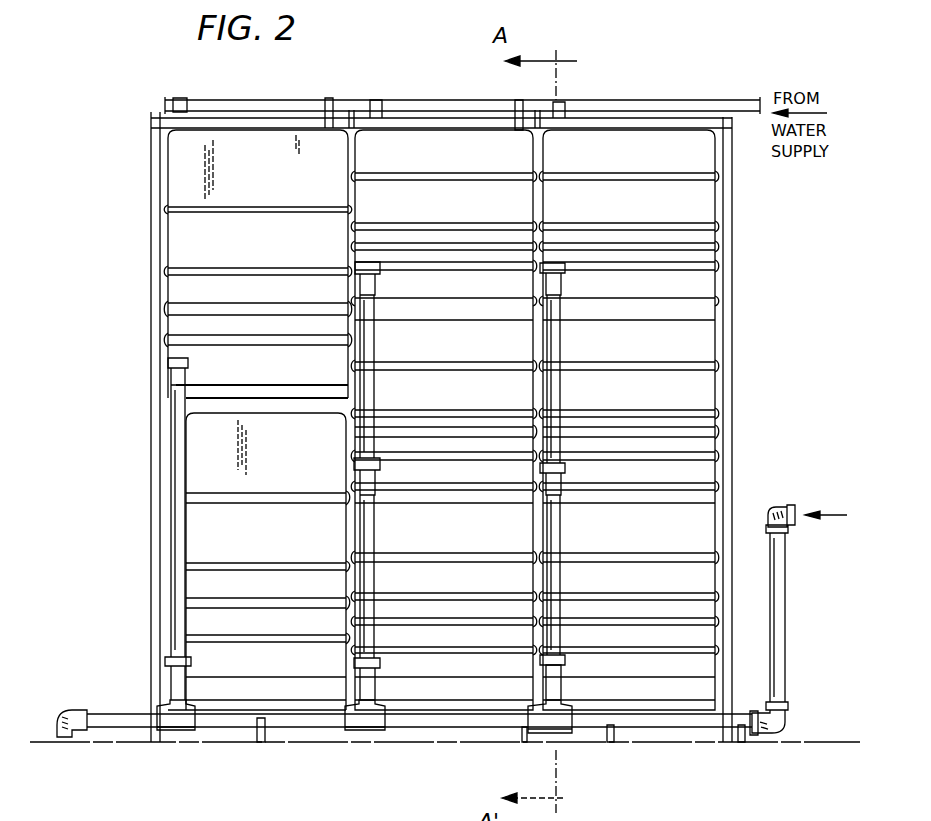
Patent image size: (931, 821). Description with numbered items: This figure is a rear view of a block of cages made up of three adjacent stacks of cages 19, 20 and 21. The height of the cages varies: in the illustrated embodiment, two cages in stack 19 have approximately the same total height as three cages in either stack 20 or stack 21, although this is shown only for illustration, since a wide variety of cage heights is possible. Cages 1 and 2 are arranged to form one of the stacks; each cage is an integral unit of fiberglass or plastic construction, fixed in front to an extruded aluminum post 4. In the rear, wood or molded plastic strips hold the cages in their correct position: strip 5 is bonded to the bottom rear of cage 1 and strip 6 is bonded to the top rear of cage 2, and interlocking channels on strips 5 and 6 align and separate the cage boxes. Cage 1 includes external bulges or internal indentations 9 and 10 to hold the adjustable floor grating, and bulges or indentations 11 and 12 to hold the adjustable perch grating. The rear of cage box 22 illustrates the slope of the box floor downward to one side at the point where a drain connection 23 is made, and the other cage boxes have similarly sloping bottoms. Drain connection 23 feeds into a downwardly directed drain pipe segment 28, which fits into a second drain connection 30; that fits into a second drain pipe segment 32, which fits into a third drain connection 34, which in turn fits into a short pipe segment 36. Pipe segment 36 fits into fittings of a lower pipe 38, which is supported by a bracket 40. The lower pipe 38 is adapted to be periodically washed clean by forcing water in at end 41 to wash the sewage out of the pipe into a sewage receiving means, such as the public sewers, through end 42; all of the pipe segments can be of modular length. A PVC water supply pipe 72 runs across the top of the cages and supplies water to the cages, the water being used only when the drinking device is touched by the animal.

The cage 1 is at (170, 186).
The cage 2 is at (165, 452).
The extruded aluminum post 4 is at (151, 170).
The strip 5 is at (245, 385).
The strip 6 is at (248, 400).
The bulge 9 is at (168, 304).
The bulge 10 is at (168, 338).
The bulge 11 is at (170, 213).
The bulge 12 is at (170, 270).
The stack of cages 19 is at (268, 146).
The stack of cages 20 is at (467, 148).
The stack of cages 21 is at (645, 151).
The cage box 22 is at (732, 158).
The drain connection 23 is at (565, 292).
The drain pipe segment 28 is at (560, 397).
The second drain connection 30 is at (566, 480).
The second drain pipe segment 32 is at (560, 580).
The third drain connection 34 is at (561, 674).
The short pipe segment 36 is at (562, 695).
The lower pipe 38 is at (637, 712).
The bracket 40 is at (609, 745).
The end 41 is at (782, 507).
The end 42 is at (60, 718).
The PVC water supply pipe 72 is at (665, 103).